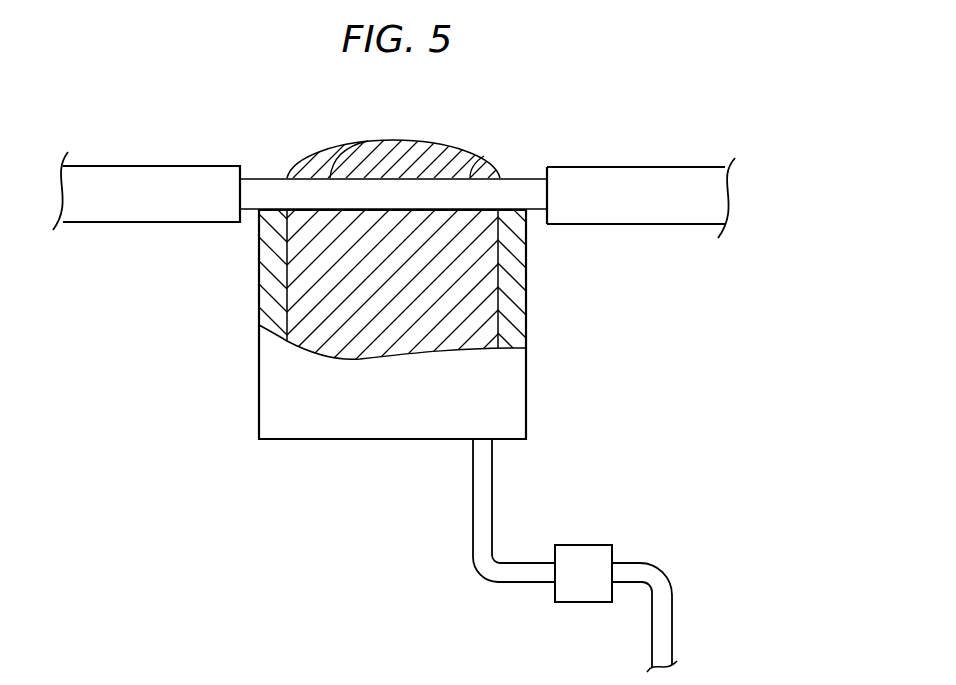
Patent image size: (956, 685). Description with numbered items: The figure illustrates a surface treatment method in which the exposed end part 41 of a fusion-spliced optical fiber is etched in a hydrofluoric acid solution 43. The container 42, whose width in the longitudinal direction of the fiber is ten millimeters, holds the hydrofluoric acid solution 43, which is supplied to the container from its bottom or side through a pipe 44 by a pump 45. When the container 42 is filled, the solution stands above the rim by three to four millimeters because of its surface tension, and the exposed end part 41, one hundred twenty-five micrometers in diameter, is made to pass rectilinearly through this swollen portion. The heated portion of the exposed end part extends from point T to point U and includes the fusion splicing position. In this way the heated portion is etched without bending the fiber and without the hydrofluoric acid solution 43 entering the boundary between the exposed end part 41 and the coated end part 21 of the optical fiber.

The coated end part of the optical fiber 21 is at (150, 173).
The exposed end part of a fusion-spliced optical fiber 41 is at (273, 183).
The container 42 is at (317, 395).
The hydrofluoric acid solution 43 is at (317, 284).
The pipe 44 is at (500, 573).
The pump 45 is at (578, 553).
The point T is at (352, 153).
The point U is at (476, 160).